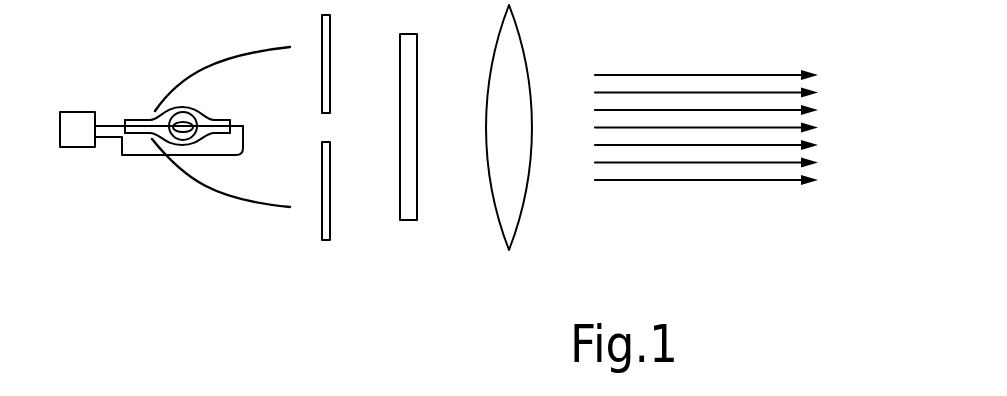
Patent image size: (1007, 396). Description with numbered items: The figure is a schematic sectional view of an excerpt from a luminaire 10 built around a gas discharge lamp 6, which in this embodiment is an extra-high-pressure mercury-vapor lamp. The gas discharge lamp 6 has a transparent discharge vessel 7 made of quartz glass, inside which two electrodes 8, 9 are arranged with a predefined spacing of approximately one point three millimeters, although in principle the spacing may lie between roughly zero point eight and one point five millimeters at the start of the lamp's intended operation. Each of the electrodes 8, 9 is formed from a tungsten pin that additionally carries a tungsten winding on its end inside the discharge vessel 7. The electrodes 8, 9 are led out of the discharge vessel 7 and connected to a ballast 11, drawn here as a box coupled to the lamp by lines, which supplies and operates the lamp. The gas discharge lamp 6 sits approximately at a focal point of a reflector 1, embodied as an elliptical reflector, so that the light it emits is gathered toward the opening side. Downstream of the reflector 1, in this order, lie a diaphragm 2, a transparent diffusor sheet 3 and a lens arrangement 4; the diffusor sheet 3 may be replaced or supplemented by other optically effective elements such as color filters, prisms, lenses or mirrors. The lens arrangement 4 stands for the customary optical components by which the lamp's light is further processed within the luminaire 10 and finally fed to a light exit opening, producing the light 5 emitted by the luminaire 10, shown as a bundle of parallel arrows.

The reflector 1 is at (217, 199).
The diaphragm 2 is at (330, 225).
The diffusor sheet 3 is at (417, 198).
The lens arrangement 4 is at (527, 208).
The light 5 is at (683, 192).
The gas discharge lamp 6 is at (132, 110).
The discharge vessel 7 is at (153, 114).
The electrode 8 is at (152, 143).
The electrode 9 is at (197, 130).
The luminaire 10 is at (290, 272).
The ballast 11 is at (77, 149).